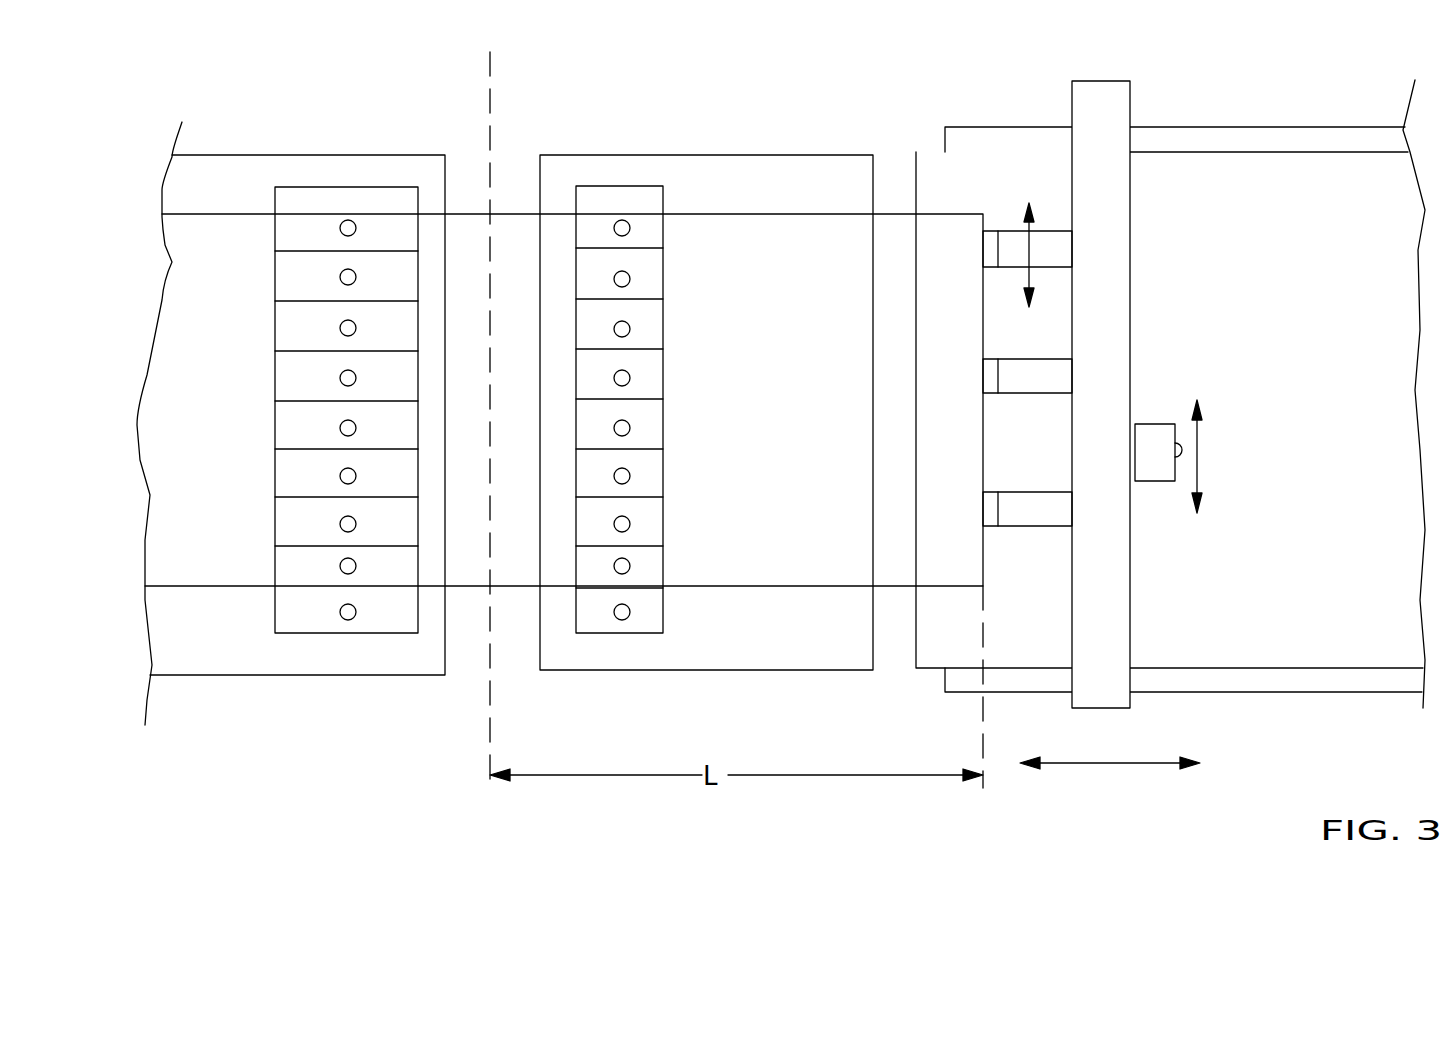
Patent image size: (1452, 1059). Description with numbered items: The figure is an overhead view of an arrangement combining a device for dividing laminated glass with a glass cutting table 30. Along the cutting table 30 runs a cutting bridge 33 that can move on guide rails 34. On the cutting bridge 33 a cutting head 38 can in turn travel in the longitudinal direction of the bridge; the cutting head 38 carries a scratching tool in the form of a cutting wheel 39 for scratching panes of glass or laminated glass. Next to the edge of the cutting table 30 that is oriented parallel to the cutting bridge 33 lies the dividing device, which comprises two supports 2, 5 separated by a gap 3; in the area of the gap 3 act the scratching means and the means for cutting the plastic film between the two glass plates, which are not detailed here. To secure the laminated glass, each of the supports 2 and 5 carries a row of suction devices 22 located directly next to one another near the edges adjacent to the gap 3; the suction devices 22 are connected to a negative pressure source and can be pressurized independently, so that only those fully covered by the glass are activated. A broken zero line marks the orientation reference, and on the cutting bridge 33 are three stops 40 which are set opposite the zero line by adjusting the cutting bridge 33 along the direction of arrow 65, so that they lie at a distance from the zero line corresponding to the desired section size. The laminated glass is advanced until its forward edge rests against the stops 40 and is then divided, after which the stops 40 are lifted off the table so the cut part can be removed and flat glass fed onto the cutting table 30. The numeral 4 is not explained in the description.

The support 2 is at (780, 178).
The gap 3 is at (508, 162).
The web 4 is at (488, 696).
The support 5 is at (247, 652).
The suction devices 22 is at (342, 204).
The glass cutting table 30 is at (1292, 112).
The cutting bridge 33 is at (1110, 226).
The guide rails 34 is at (1182, 140).
The cutting head 38 is at (1148, 470).
The cutting wheel 39 is at (1200, 455).
The stops 40 is at (1053, 247).
The arrow 65 is at (1100, 768).